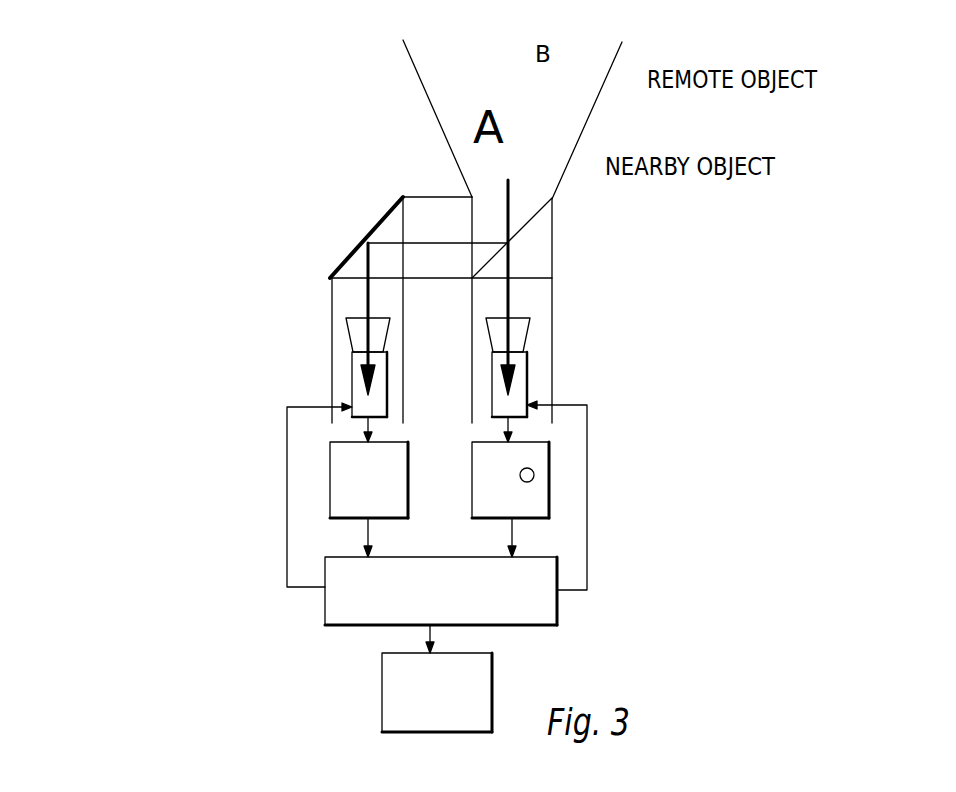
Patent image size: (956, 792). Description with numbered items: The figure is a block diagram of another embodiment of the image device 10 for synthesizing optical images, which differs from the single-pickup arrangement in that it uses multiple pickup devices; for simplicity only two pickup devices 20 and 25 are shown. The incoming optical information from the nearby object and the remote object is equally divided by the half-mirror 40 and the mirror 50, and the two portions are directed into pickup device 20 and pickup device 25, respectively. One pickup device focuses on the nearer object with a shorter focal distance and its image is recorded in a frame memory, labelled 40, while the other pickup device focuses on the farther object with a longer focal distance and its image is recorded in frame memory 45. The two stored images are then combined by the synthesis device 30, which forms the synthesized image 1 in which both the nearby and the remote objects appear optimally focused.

The synthesized image 1 is at (482, 690).
The image device 10 is at (645, 408).
The pickup device 20 is at (528, 378).
The pickup device 25 is at (352, 370).
The synthesis device 30 is at (557, 560).
The half-mirror 40 is at (543, 212).
The frame memory 45 is at (337, 475).
The mirror 50 is at (362, 243).